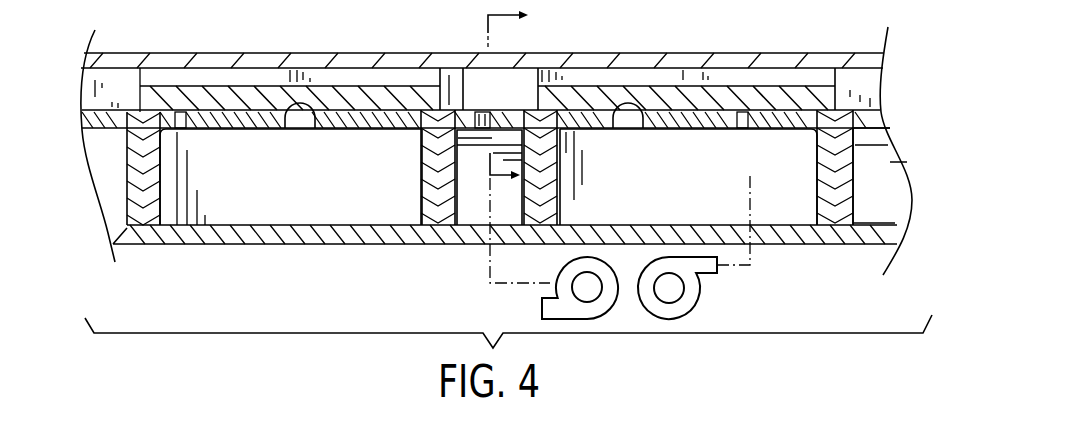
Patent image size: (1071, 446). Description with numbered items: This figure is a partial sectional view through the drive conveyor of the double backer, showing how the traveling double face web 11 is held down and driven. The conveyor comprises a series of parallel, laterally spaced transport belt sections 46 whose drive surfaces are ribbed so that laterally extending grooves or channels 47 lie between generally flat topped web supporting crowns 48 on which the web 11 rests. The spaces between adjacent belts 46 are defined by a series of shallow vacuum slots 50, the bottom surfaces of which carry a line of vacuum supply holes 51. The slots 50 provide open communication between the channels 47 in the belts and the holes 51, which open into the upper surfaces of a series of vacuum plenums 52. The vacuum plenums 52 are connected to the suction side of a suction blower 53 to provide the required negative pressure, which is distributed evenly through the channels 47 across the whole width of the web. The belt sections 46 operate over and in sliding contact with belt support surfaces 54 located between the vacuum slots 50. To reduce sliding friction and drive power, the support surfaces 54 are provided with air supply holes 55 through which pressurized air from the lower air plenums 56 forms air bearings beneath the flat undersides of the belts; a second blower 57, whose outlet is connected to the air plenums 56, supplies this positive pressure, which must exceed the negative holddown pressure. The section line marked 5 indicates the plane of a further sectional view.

The double face web 11 is at (541, 62).
The web supporting crowns 48 is at (265, 54).
The grooves or channels 47 is at (623, 80).
The transport belt sections 46 is at (395, 100).
The vacuum slots 50 is at (452, 111).
The vacuum supply holes 51 is at (483, 110).
The air supply holes 55 is at (180, 115).
The belt support surfaces 54 is at (292, 106).
The air plenums 56 is at (301, 213).
The vacuum plenums 52 is at (478, 230).
The section line 5- 5 is at (610, 144).
The suction blower 53 is at (542, 309).
The second blower 57 is at (698, 297).